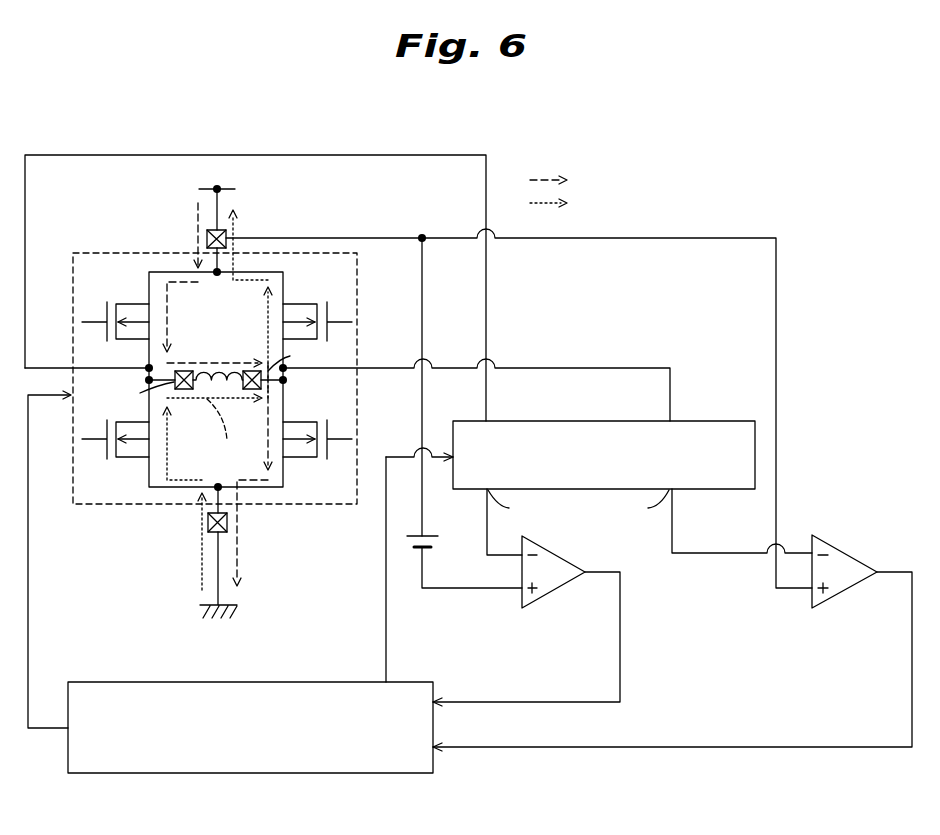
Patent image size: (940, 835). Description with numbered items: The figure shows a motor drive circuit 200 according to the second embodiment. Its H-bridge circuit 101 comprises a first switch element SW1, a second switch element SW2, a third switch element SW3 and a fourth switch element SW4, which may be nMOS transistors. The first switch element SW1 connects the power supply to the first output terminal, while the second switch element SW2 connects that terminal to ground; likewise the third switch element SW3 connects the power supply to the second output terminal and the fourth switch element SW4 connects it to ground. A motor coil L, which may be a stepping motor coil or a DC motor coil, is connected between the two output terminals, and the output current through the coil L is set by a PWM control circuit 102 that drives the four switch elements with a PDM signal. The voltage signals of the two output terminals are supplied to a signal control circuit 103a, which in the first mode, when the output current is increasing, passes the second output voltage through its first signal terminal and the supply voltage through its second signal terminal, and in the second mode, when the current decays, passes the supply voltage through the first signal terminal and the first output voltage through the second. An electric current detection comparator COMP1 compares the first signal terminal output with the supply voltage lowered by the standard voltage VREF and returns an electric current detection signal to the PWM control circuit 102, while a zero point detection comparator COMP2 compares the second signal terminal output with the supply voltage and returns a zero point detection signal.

The motor drive circuit 200 is at (468, 469).
The H-bridge circuit 101 is at (358, 325).
The PWM control circuit 102 is at (291, 682).
The signal control circuit 103a is at (572, 421).
The first switch element SW1 is at (304, 304).
The second switch element SW2 is at (300, 457).
The third switch element SW3 is at (130, 304).
The fourth switch element SW4 is at (133, 457).
The motor coil L is at (218, 371).
The electric current detection comparator COMP1 is at (557, 552).
The zero point detection comparator COMP2 is at (875, 532).
The standard voltage VREF is at (443, 553).